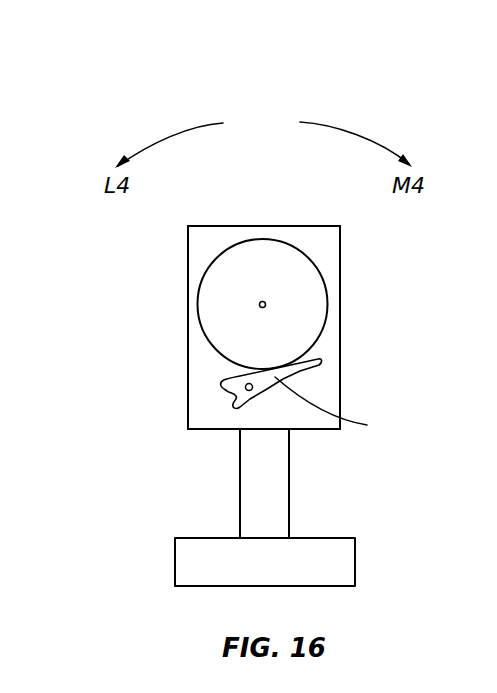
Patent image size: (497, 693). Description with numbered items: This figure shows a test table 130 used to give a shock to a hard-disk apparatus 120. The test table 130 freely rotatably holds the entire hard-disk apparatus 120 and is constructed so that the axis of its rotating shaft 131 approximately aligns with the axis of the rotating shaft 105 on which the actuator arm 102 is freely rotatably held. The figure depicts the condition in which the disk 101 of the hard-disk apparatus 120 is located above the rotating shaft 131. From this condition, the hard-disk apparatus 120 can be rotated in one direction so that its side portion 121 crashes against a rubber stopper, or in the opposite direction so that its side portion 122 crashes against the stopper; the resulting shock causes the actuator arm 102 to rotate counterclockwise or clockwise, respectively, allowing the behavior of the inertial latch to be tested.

The hard-disk apparatus 120 is at (171, 124).
The disk 101 is at (273, 252).
The side portion 121 is at (188, 263).
The side portion 122 is at (340, 263).
The rotating shaft 105 is at (220, 410).
The rotating shaft 131 is at (232, 389).
The actuator arm 102 is at (342, 407).
The test table 130 is at (275, 485).